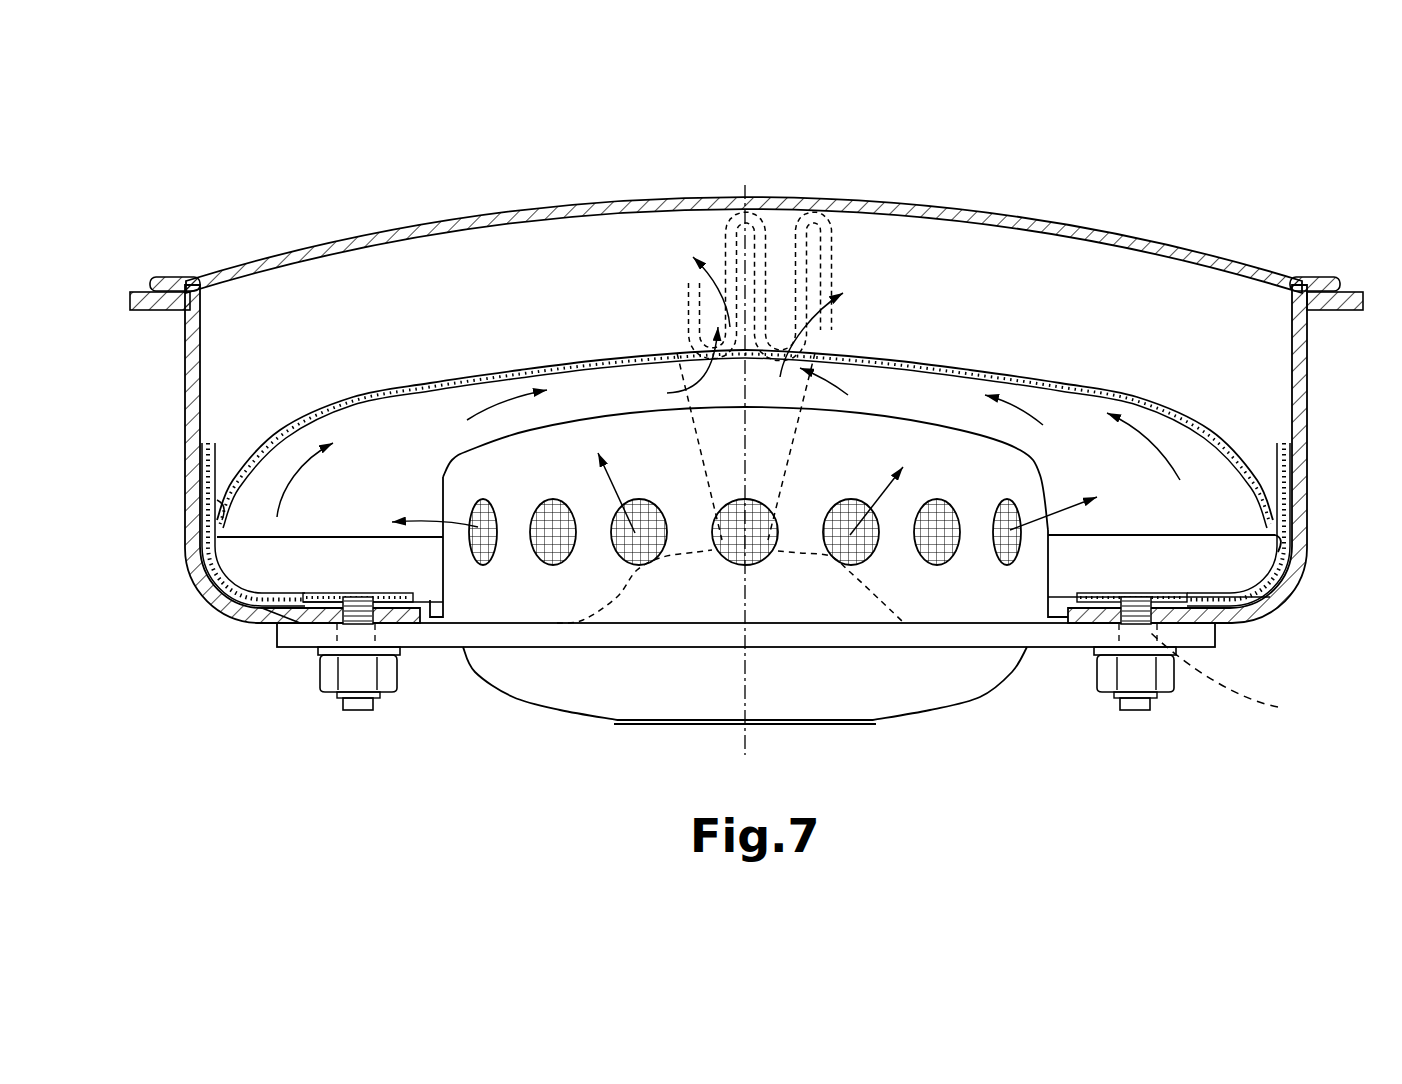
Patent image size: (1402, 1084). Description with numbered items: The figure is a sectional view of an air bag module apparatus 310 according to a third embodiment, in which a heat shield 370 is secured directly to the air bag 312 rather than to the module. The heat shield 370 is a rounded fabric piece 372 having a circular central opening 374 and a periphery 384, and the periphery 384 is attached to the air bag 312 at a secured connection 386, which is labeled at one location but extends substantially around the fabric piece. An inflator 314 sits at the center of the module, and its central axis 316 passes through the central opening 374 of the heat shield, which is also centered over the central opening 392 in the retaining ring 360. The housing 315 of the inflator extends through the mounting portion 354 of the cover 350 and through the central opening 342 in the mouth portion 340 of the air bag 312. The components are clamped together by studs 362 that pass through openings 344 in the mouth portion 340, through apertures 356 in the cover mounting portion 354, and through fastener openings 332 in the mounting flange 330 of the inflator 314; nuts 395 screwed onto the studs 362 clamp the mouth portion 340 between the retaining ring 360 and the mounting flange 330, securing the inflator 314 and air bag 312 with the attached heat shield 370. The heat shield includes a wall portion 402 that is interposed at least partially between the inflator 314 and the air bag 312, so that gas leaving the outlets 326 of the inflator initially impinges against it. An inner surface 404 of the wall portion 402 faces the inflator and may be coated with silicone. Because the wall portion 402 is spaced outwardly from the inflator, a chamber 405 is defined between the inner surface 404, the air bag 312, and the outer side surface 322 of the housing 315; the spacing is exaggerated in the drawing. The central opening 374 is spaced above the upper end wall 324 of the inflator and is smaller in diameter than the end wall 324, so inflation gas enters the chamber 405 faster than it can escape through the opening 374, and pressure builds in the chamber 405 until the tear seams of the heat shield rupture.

The apparatus 310 is at (160, 629).
The air bag 312 is at (826, 250).
The inflator 314 is at (930, 705).
The housing 315 is at (1017, 590).
The central axis 316 is at (745, 740).
The outer side surface 322 is at (663, 597).
The end wall 324 is at (905, 420).
The outlets 326 is at (872, 547).
The mounting flange 330 is at (1207, 638).
The fastener openings 332 is at (1238, 677).
The mouth portion 340 is at (1298, 572).
The central opening 342 is at (1060, 593).
The openings 344 is at (1163, 602).
The cover 350 is at (1108, 232).
The mounting portion 354 is at (273, 633).
The apertures 356 is at (333, 620).
The retaining ring 360 is at (343, 600).
The studs 362 is at (363, 703).
The heat shield 370 is at (1063, 382).
The fabric piece 372 is at (350, 392).
The central opening 374 is at (683, 353).
The periphery 384 is at (1290, 542).
The secured connection 386 is at (200, 525).
The central opening 392 is at (1073, 594).
The nuts 395 is at (333, 673).
The wall portion 402 is at (267, 447).
The inner surface 404 is at (187, 483).
The chamber 405 is at (423, 413).